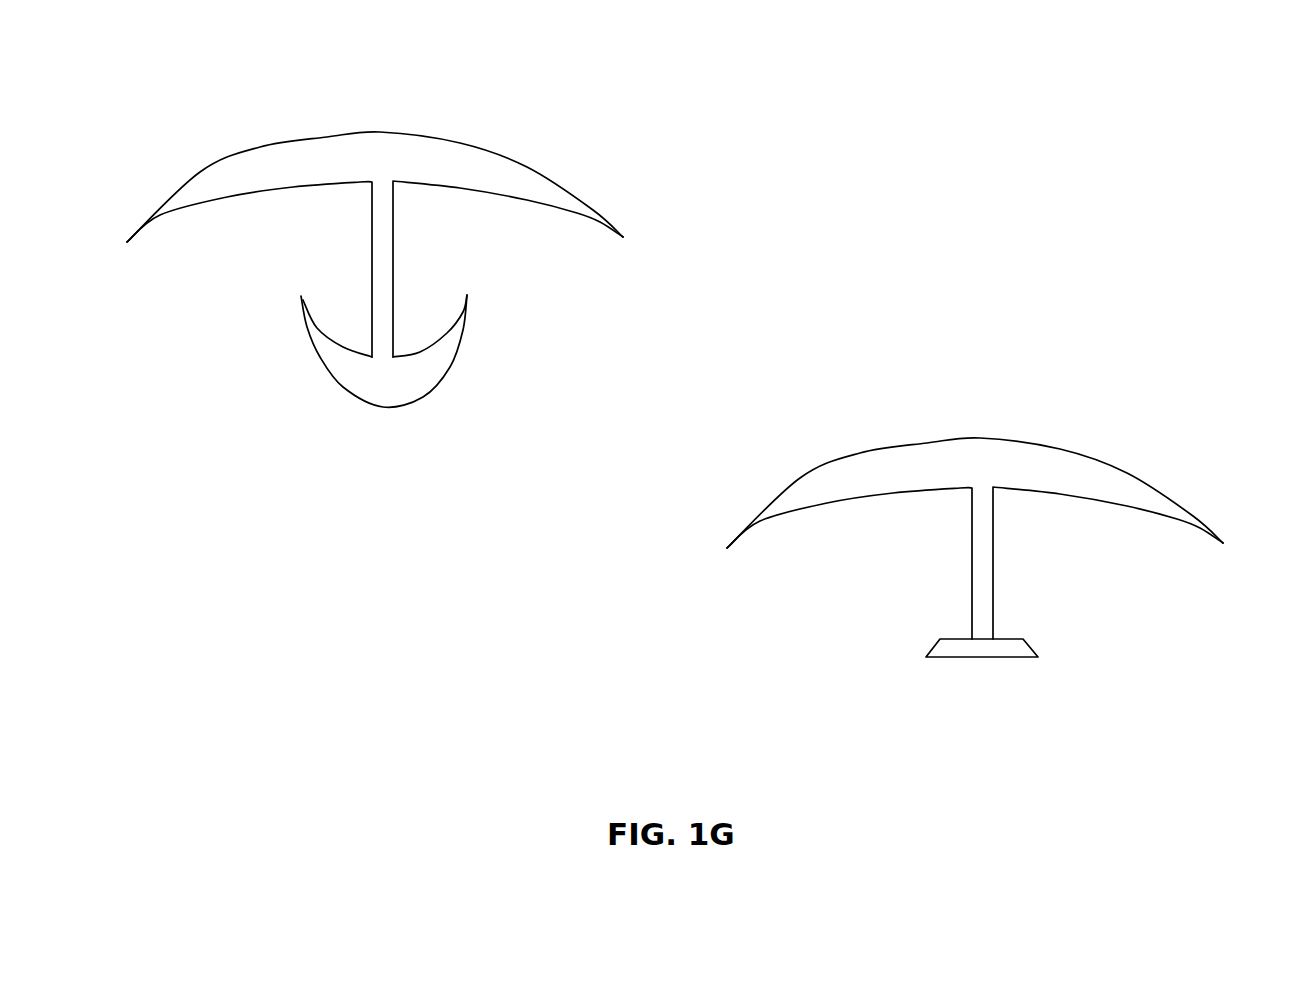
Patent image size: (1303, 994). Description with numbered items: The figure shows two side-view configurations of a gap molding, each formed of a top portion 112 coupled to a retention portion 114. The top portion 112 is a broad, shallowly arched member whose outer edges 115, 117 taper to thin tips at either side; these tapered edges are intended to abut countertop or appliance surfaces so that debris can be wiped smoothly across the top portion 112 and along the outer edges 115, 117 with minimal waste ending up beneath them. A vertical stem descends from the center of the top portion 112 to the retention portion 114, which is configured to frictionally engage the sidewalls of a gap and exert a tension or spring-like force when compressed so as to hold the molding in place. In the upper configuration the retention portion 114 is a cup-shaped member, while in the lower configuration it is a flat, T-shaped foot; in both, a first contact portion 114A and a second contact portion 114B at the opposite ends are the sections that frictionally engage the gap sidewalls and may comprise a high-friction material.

The top portion 112 is at (343, 145).
The retention portion 114 is at (403, 390).
The first contact portion 114A is at (302, 320).
The second contact portion 114B is at (467, 325).
The outer edge 115 is at (125, 237).
The outer edge 117 is at (600, 220).